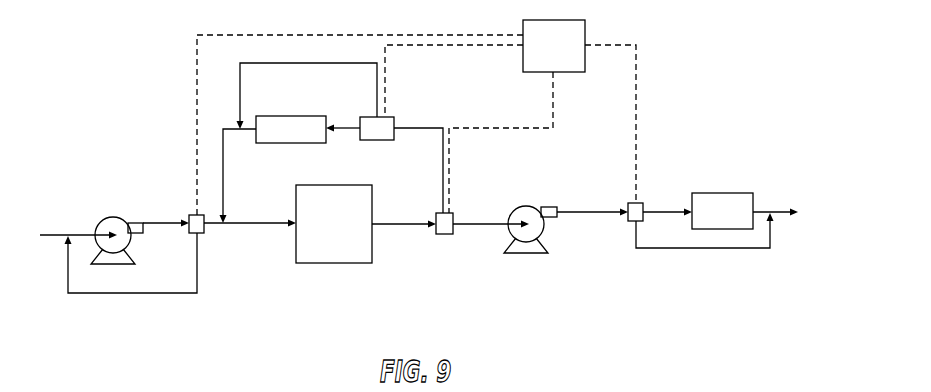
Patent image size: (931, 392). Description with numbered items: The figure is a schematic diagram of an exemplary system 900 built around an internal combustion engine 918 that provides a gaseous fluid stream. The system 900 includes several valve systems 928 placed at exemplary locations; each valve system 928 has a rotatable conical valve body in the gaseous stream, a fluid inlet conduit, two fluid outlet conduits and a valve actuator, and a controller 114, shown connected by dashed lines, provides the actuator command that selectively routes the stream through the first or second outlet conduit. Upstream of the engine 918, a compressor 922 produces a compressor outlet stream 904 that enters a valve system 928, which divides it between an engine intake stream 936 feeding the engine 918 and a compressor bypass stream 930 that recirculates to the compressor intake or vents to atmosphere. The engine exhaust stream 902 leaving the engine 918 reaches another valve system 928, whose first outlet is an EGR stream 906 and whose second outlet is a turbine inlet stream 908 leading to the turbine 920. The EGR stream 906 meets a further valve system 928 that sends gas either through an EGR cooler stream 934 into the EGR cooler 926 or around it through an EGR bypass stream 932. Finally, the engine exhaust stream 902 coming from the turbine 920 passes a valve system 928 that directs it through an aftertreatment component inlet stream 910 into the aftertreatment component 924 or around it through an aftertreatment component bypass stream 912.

The system 900 is at (119, 57).
The controller 114 is at (572, 60).
The compressor 922 is at (113, 217).
The compressor outlet stream 904 is at (155, 229).
The valve system 928 is at (191, 215).
The engine intake stream 936 is at (257, 226).
The EGR bypass stream 932 is at (310, 64).
The EGR cooler stream 934 is at (348, 128).
The EGR cooler 926 is at (290, 143).
The EGR stream 906 is at (443, 180).
The internal combustion engine 918 is at (351, 236).
The engine exhaust stream 902 is at (403, 227).
The turbine inlet stream 908 is at (477, 224).
The turbine 920 is at (528, 207).
The aftertreatment component inlet stream 910 is at (656, 212).
The aftertreatment component 924 is at (741, 225).
The aftertreatment component bypass stream 912 is at (693, 250).
The compressor bypass stream 930 is at (132, 294).